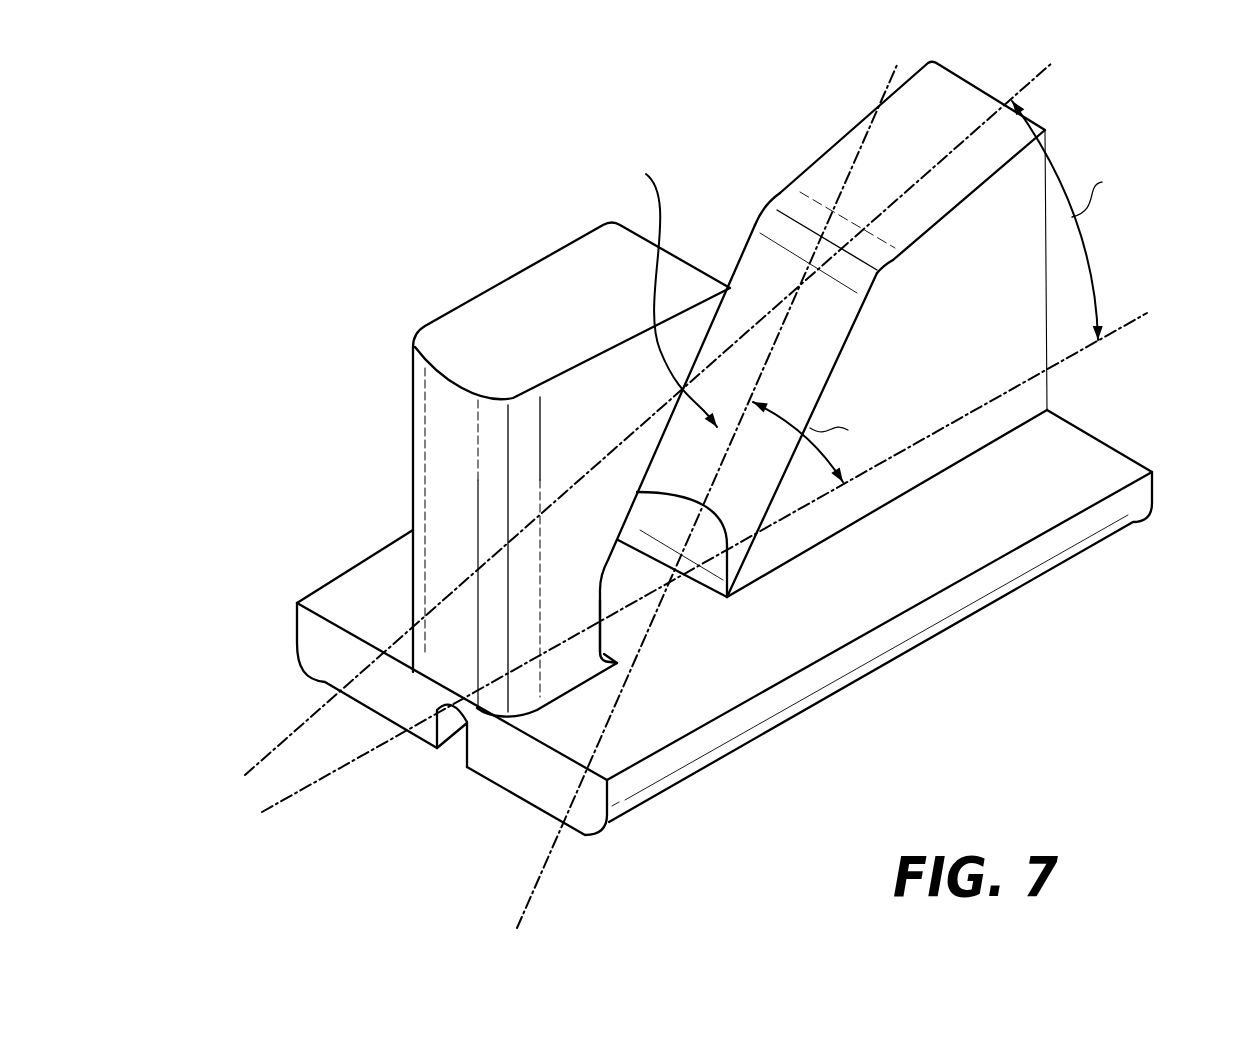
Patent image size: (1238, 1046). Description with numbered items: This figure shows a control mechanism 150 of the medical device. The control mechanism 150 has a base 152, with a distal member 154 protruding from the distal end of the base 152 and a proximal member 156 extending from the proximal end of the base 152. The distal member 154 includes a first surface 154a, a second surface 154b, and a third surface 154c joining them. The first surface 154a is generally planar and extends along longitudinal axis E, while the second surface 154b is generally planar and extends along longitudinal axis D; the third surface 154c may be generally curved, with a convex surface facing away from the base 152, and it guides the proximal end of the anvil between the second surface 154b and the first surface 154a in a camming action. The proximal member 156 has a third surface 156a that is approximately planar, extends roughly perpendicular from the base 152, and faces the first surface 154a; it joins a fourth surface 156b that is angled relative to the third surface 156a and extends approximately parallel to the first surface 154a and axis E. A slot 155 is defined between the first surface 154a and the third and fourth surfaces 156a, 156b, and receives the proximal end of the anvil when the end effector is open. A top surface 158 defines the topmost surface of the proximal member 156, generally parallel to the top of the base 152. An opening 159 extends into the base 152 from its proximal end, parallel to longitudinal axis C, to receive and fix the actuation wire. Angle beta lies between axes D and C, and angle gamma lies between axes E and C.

The control mechanism 150 is at (378, 208).
The base 152 is at (724, 633).
The distal member 154 is at (907, 367).
The first surface 154a is at (770, 325).
The second surface 154b is at (940, 108).
The third surface 154c is at (786, 202).
The slot 155 is at (665, 293).
The proximal member 156 is at (567, 468).
The third surface 156a is at (600, 609).
The fourth surface 156b is at (727, 597).
The top surface 158 is at (503, 447).
The opening 159 is at (452, 727).